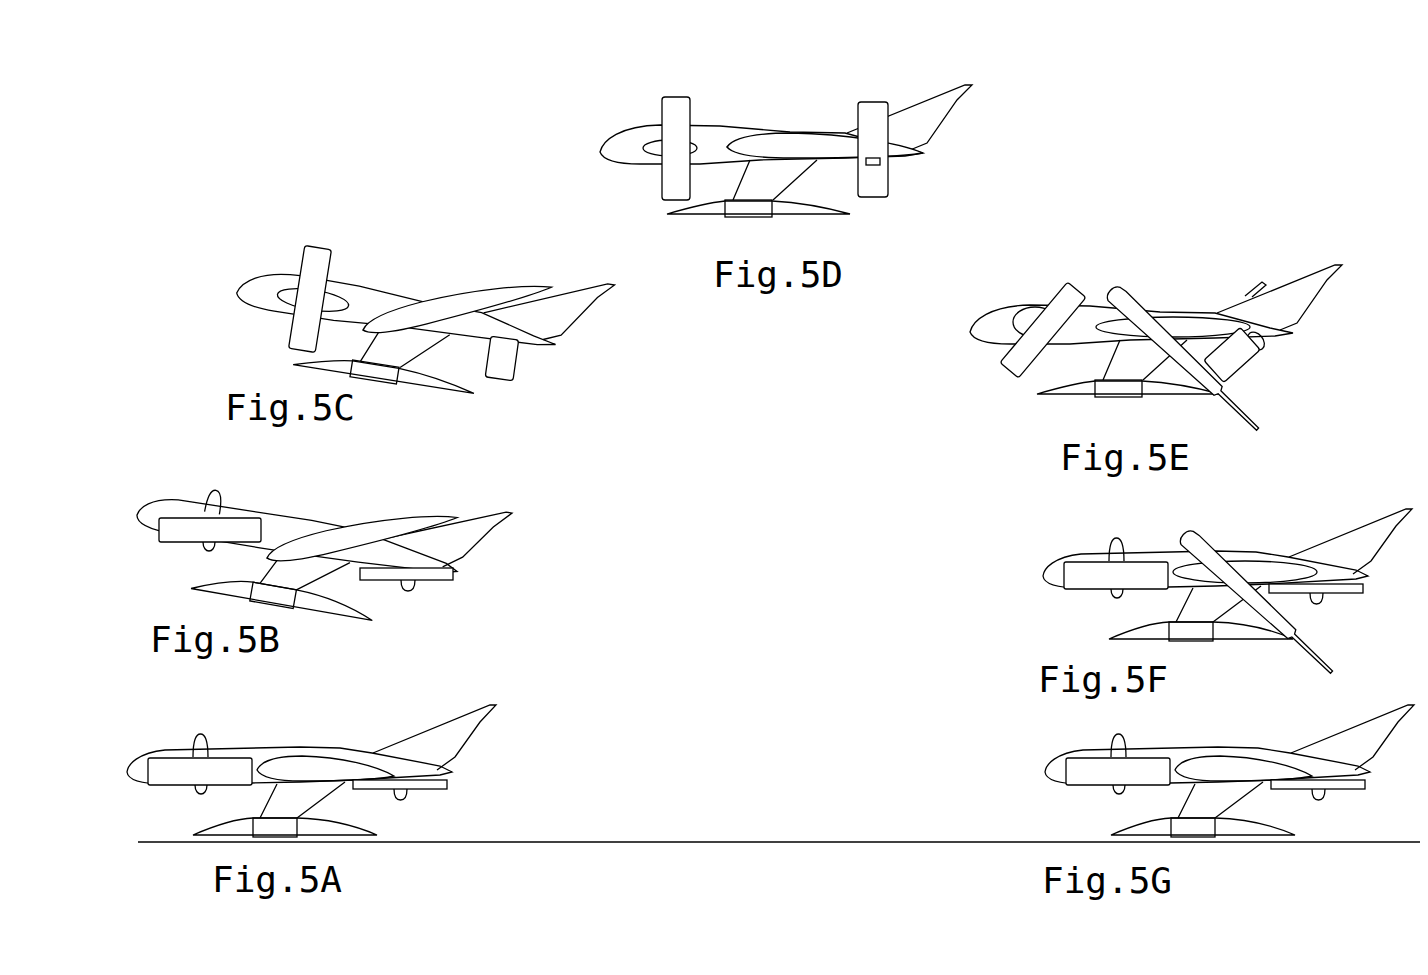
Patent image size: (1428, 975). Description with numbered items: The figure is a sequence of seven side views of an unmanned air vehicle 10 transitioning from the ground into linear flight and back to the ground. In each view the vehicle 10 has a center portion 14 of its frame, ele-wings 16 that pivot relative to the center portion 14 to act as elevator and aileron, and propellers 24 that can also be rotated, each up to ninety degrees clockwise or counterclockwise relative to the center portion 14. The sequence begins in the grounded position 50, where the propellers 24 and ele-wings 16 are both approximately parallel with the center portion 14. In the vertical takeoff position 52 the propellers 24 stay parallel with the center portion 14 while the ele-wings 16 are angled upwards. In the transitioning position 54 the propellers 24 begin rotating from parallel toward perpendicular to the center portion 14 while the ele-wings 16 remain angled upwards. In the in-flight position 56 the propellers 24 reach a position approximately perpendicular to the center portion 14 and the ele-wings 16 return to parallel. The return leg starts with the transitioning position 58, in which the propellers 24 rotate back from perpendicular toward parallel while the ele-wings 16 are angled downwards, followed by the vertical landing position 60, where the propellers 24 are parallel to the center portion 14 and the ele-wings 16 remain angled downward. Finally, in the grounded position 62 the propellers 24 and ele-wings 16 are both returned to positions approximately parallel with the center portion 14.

In FIG. 5A, the unmanned air vehicle 10 is at (155, 720).
In FIG. 5G, the unmanned air vehicle 10 is at (1047, 738).
In FIG. 5F, the unmanned air vehicle 10 is at (1068, 523).
In FIG. 5B, the unmanned air vehicle 10 is at (172, 473).
In FIG. 5D, the unmanned air vehicle 10 is at (643, 60).
In FIG. 5C, the unmanned air vehicle 10 is at (250, 235).
In FIG. 5E, the unmanned air vehicle 10 is at (1063, 262).
In FIG. 5A, the center portion 14 is at (292, 748).
In FIG. 5G, the center portion 14 is at (1200, 752).
In FIG. 5F, the center portion 14 is at (1270, 558).
In FIG. 5B, the center portion 14 is at (292, 525).
In FIG. 5D, the center portion 14 is at (742, 128).
In FIG. 5C, the center portion 14 is at (377, 297).
In FIG. 5E, the center portion 14 is at (1197, 313).
In FIG. 5A, the ele-wings 16 is at (330, 770).
In FIG. 5G, the ele-wings 16 is at (1252, 765).
In FIG. 5F, the ele-wings 16 is at (1207, 553).
In FIG. 5B, the ele-wings 16 is at (347, 535).
In FIG. 5D, the ele-wings 16 is at (802, 147).
In FIG. 5C, the ele-wings 16 is at (447, 308).
In FIG. 5E, the ele-wings 16 is at (1137, 307).
In FIG. 5A, the propellers 24 is at (148, 797).
In FIG. 5G, the propellers 24 is at (1077, 793).
In FIG. 5F, the propellers 24 is at (1093, 598).
In FIG. 5B, the propellers 24 is at (178, 550).
In FIG. 5D, the propellers 24 is at (648, 183).
In FIG. 5C, the propellers 24 is at (280, 325).
In FIG. 5E, the propellers 24 is at (993, 363).
In FIG. 5G, the grounded position 50 is at (978, 773).
In FIG. 5F, the vertical takeoff position 52 is at (978, 597).
In FIG. 5E, the transitioning position 54 is at (937, 345).
In FIG. 5D, the in-flight position 56 is at (868, 232).
In FIG. 5C, the transitioning position 58 is at (622, 325).
In FIG. 5B, the vertical landing position 60 is at (550, 542).
In FIG. 5A, the grounded position 62 is at (520, 722).